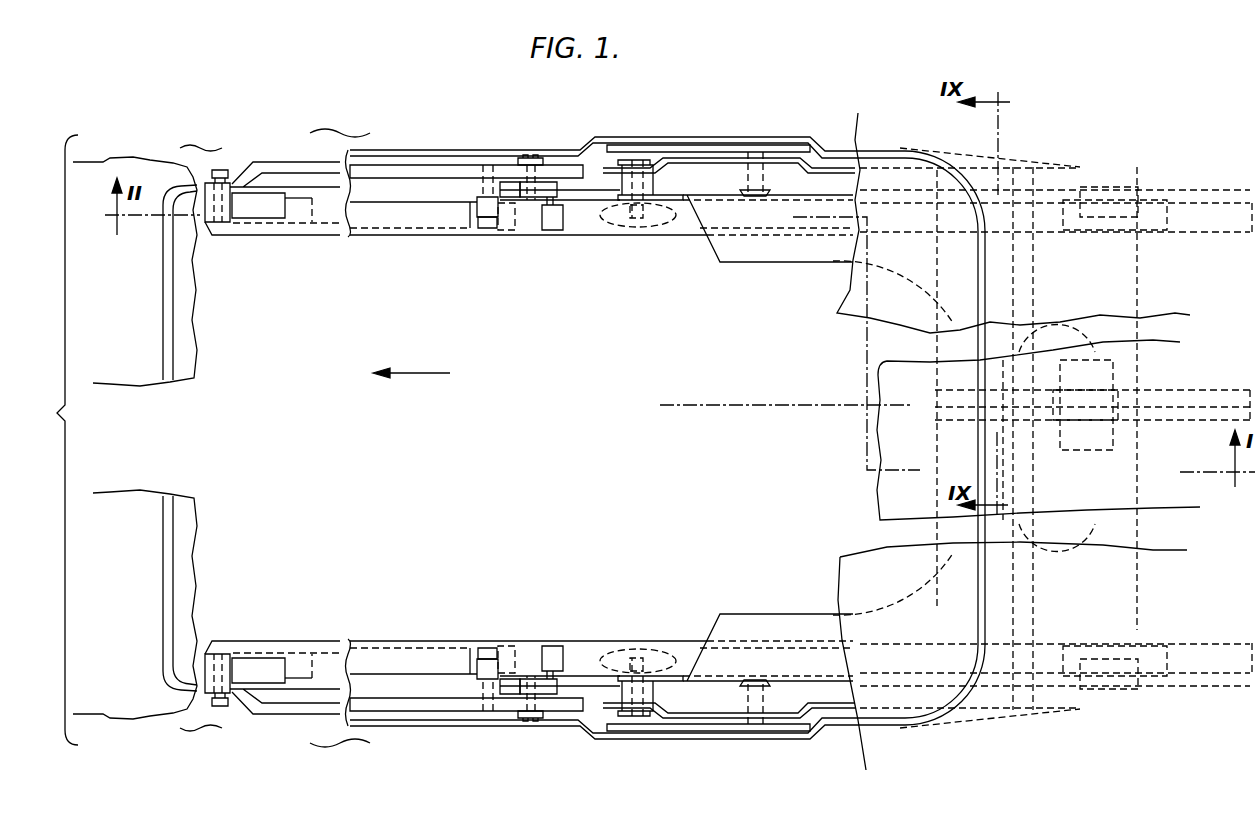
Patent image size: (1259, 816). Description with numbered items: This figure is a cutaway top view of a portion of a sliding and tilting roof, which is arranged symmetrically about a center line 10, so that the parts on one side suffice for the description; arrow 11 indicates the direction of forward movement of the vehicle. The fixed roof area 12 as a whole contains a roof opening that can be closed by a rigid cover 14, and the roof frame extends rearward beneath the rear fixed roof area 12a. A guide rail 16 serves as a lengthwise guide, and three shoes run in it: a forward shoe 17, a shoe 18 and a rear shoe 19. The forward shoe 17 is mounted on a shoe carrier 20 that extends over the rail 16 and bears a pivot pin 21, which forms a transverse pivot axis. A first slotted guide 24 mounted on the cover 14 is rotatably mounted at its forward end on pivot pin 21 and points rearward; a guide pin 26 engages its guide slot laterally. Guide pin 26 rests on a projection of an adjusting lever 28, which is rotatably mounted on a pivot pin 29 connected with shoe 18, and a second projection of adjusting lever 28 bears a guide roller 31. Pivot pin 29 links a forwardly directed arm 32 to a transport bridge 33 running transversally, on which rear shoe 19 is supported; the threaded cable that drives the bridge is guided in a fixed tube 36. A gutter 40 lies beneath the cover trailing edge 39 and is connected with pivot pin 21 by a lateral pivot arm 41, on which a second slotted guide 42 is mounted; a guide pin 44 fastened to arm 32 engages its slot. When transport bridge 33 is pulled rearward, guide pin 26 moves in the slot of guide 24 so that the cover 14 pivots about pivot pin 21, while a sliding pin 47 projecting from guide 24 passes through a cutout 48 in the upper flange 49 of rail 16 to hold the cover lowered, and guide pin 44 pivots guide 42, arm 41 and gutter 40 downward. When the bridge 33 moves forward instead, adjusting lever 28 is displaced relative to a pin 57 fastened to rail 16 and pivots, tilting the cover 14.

The center line 10 is at (693, 403).
The arrow 11 is at (420, 373).
The fixed roof area 12 is at (104, 175).
The rear fixed roof area 12a is at (1100, 494).
The rigid cover 14 is at (883, 497).
The guide rail 16 is at (413, 217).
The forward shoe 17 is at (303, 223).
The shoe 18 is at (615, 232).
The rear shoe 19 is at (1150, 197).
The shoe carrier 20 is at (265, 212).
The pivot pin 21 is at (221, 170).
The first slotted guide 24 is at (378, 166).
The guide pin 26 is at (532, 158).
The adjusting lever 28 is at (609, 165).
The pivot pin 29 is at (636, 168).
The guide roller 31 is at (512, 233).
The arm 32 is at (703, 160).
The transport bridge 33 is at (1128, 381).
The fixed tube 36 is at (1187, 415).
The cover trailing edge 39 is at (957, 318).
The gutter 40 is at (978, 160).
The lateral pivot arm 41 is at (435, 150).
The second slotted guide 42 is at (790, 146).
The guide pin 44 is at (757, 150).
The sliding pin 47 is at (487, 220).
The cutout 48 is at (473, 223).
The upper flange 49 is at (372, 225).
The pin 57 is at (550, 237).